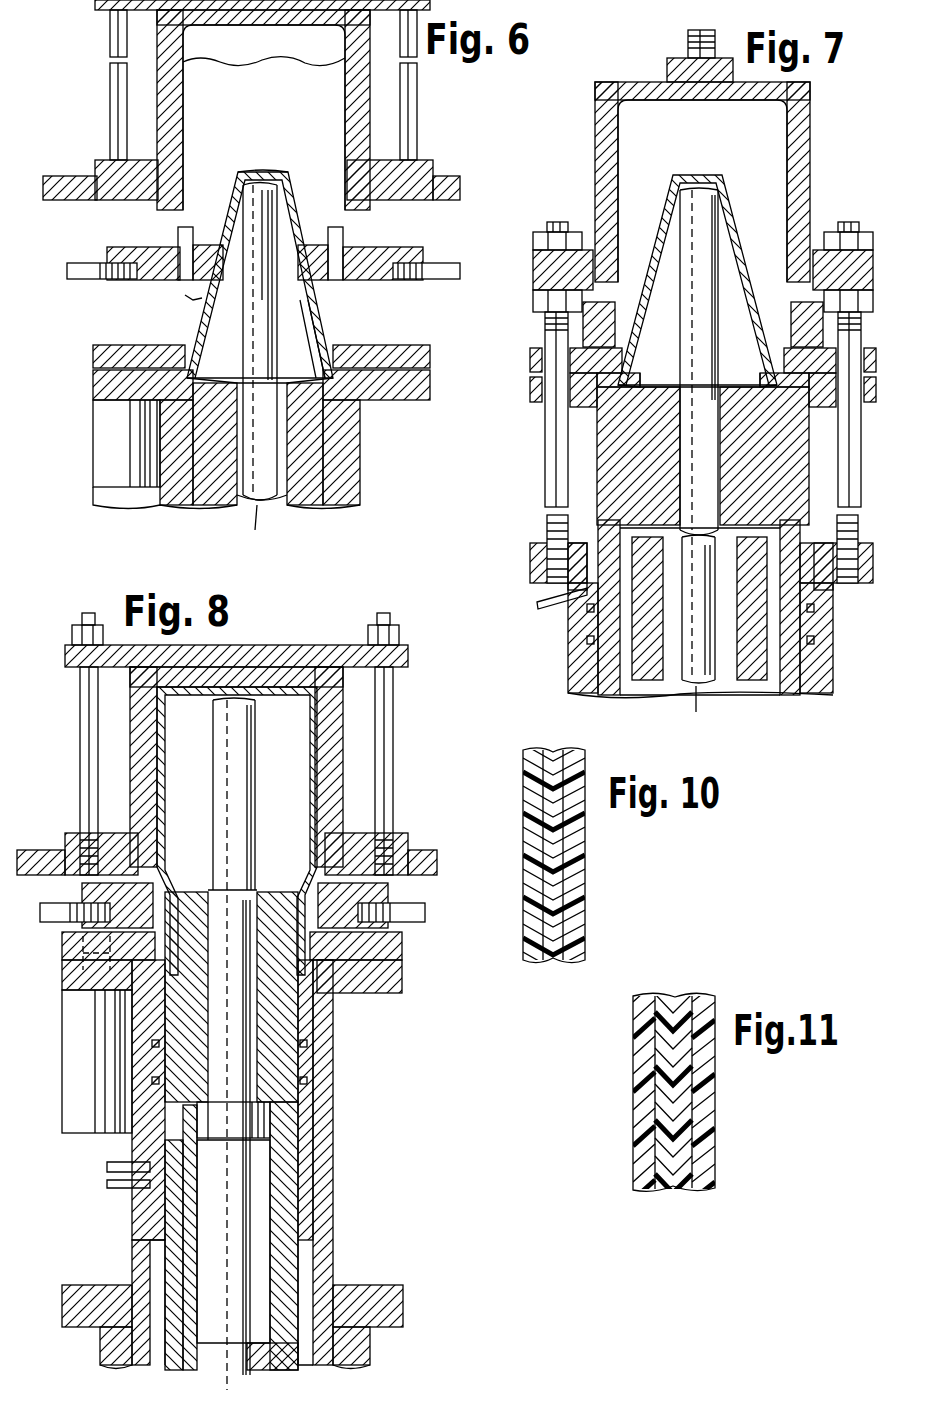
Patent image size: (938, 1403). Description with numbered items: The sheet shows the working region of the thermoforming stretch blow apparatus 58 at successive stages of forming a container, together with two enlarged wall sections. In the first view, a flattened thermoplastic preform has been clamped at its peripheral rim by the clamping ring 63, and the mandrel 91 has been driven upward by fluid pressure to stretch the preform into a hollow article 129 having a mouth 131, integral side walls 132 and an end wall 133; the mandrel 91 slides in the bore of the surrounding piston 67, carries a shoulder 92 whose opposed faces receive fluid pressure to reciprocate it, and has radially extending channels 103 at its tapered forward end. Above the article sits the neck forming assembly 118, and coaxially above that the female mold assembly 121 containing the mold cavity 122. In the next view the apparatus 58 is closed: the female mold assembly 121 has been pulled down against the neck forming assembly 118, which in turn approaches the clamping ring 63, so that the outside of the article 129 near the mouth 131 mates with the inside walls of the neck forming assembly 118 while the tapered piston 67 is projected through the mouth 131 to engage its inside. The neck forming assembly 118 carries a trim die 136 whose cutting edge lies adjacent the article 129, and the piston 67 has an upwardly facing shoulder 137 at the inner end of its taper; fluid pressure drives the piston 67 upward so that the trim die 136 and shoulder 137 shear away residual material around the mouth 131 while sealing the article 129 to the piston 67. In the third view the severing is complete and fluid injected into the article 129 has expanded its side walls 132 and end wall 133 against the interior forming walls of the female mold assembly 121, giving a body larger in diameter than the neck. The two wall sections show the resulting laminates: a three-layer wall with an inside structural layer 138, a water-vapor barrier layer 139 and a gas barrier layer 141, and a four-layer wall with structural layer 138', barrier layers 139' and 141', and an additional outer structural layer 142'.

In FIG. 7, the thermoforming stretch blow apparatus 58 is at (815, 193).
In FIG. 8, the thermoforming stretch blow apparatus 58 is at (400, 745).
In FIG. 6, the clamping ring 63 is at (430, 357).
In FIG. 7, the clamping ring 63 is at (530, 365).
In FIG. 6, the piston 67 is at (310, 497).
In FIG. 7, the piston 67 is at (685, 609).
In FIG. 8, the piston 67 is at (287, 1052).
In FIG. 6, the mandrel 91 is at (283, 342).
In FIG. 7, the mandrel 91 is at (718, 357).
In FIG. 8, the mandrel 91 is at (248, 842).
In FIG. 8, the shoulder 92 is at (270, 1117).
In FIG. 8, the radially extending channels 103 is at (268, 890).
In FIG. 6, the neck forming assembly 118 is at (207, 240).
In FIG. 7, the female mold assembly 121 is at (637, 82).
In FIG. 8, the female mold assembly 121 is at (298, 657).
In FIG. 8, the mold cavity 122 is at (155, 790).
In FIG. 6, the hollow article 129 is at (327, 316).
In FIG. 6, the mouth 131 is at (205, 378).
In FIG. 7, the mouth 131 is at (655, 376).
In FIG. 6, the side walls 132 is at (337, 240).
In FIG. 6, the end wall 133 is at (273, 172).
In FIG. 7, the end wall 133 is at (703, 175).
In FIG. 6, the trim die 136 is at (187, 298).
In FIG. 8, the shoulder 137 is at (327, 998).
In FIG. 10, the structural layer 138 is at (529, 855).
In FIG. 10, the barrier layer 139 is at (554, 867).
In FIG. 10, the barrier layer 141 is at (579, 856).
In FIG. 11, the structural layer 138' is at (643, 1091).
In FIG. 11, the barrier layer 139' is at (679, 1082).
In FIG. 11, the barrier layer 141' is at (728, 1076).
In FIG. 11, the structural layer 142' is at (737, 1110).